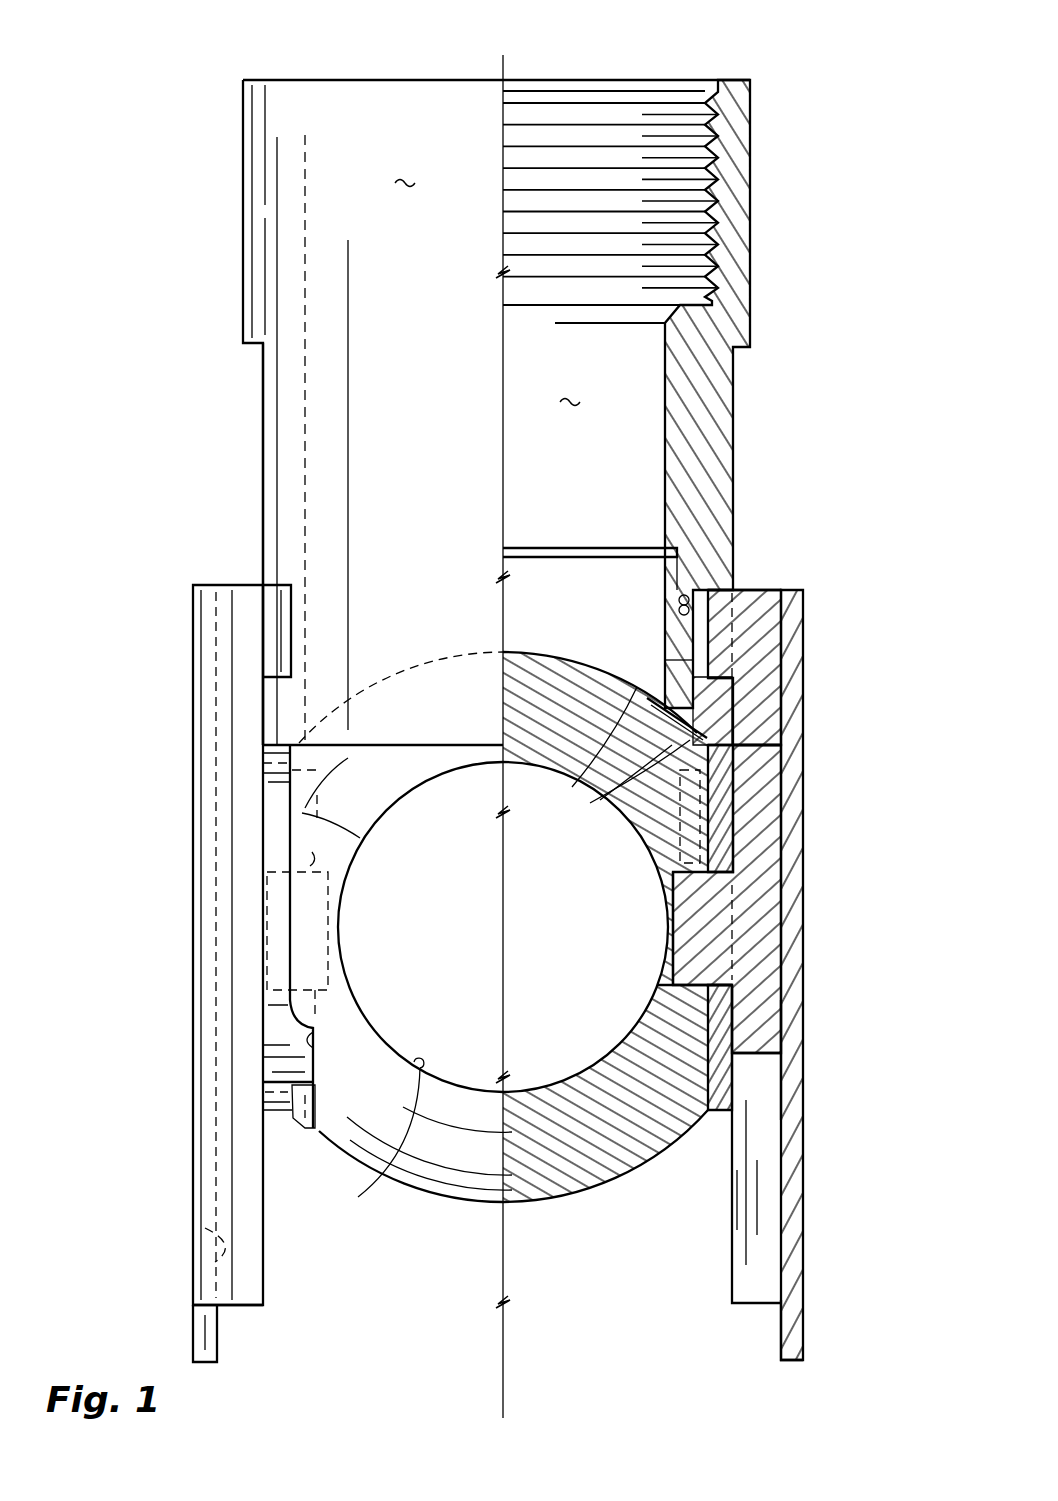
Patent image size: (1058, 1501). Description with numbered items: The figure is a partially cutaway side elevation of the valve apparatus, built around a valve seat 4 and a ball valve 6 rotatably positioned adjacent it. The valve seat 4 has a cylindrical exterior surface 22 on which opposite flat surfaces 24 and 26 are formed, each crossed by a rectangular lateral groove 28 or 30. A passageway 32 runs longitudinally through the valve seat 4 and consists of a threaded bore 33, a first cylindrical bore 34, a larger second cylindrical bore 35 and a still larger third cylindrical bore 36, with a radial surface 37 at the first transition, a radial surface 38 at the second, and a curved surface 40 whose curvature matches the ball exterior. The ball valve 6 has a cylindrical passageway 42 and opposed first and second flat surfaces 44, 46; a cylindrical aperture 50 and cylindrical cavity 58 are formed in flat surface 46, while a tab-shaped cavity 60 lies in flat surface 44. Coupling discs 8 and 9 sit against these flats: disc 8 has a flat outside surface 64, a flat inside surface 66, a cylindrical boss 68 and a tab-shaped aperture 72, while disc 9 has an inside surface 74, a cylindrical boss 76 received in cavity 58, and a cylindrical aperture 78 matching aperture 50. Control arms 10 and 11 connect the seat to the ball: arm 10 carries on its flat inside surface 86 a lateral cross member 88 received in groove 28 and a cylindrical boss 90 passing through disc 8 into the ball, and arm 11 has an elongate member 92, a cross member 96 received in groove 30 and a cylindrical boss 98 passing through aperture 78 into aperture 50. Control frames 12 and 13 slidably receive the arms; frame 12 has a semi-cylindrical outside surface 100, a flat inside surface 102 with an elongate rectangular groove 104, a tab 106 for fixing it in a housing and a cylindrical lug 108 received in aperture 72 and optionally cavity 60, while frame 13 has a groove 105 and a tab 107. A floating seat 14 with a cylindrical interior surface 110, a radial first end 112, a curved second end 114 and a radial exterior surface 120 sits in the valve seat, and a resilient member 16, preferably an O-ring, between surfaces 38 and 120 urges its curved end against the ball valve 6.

The valve seat 4 is at (405, 164).
The ball valve 6 is at (447, 1177).
The coupling disc 8 is at (278, 917).
The coupling disc 9 is at (804, 1022).
The control arm 10 is at (235, 782).
The control arm 11 is at (780, 860).
The control frame 12 is at (215, 683).
The control frame 13 is at (804, 600).
The floating seat 14 is at (732, 700).
The resilient member 16 is at (738, 585).
The cylindrical exterior surface 22 is at (277, 152).
The flat surface 24 is at (263, 368).
The flat surface 26 is at (733, 380).
The lateral groove 28 is at (262, 640).
The lateral groove 30 is at (760, 650).
The passageway 32 is at (570, 383).
The threaded bore 33 is at (690, 124).
The first cylindrical bore 34 is at (659, 419).
The second cylindrical bore 35 is at (672, 578).
The third cylindrical bore 36 is at (680, 668).
The radial surface 37 is at (628, 552).
The radial surface 38 is at (676, 601).
The curved surface 40 is at (620, 790).
The cylindrical passageway 42 is at (387, 1170).
The first flat surface 44 is at (295, 862).
The second flat surface 46 is at (745, 987).
The cylindrical aperture 50 is at (672, 892).
The cylindrical cavity 58 is at (800, 790).
The tab-shaped cavity 60 is at (317, 1030).
The flat outside surface 64 is at (270, 818).
The flat inside surface 66 is at (305, 1120).
The cylindrical boss 68 is at (360, 838).
The tab-shaped aperture 72 is at (292, 1080).
The flat inside surface 74 is at (670, 1118).
The cylindrical boss 76 is at (735, 800).
The cylindrical aperture 78 is at (700, 985).
The flat inside surface 86 is at (264, 728).
The lateral cross member 88 is at (270, 598).
The cylindrical boss 90 is at (290, 1024).
The elongate member 92 is at (760, 770).
The lateral cross member 96 is at (740, 588).
The cylindrical boss 98 is at (722, 905).
The semi-cylindrical outside surface 100 is at (240, 1180).
The flat inside surface 102 is at (268, 1275).
The elongate rectangular groove 104 is at (235, 1232).
The elongate rectangular groove 105 is at (785, 1180).
The tab 106 is at (217, 1347).
The tab 107 is at (781, 1345).
The cylindrical lug 108 is at (290, 1050).
The cylindrical interior surface 110 is at (763, 743).
The radial first end 112 is at (535, 548).
The curved second end 114 is at (590, 777).
The radial exterior surface 120 is at (686, 622).